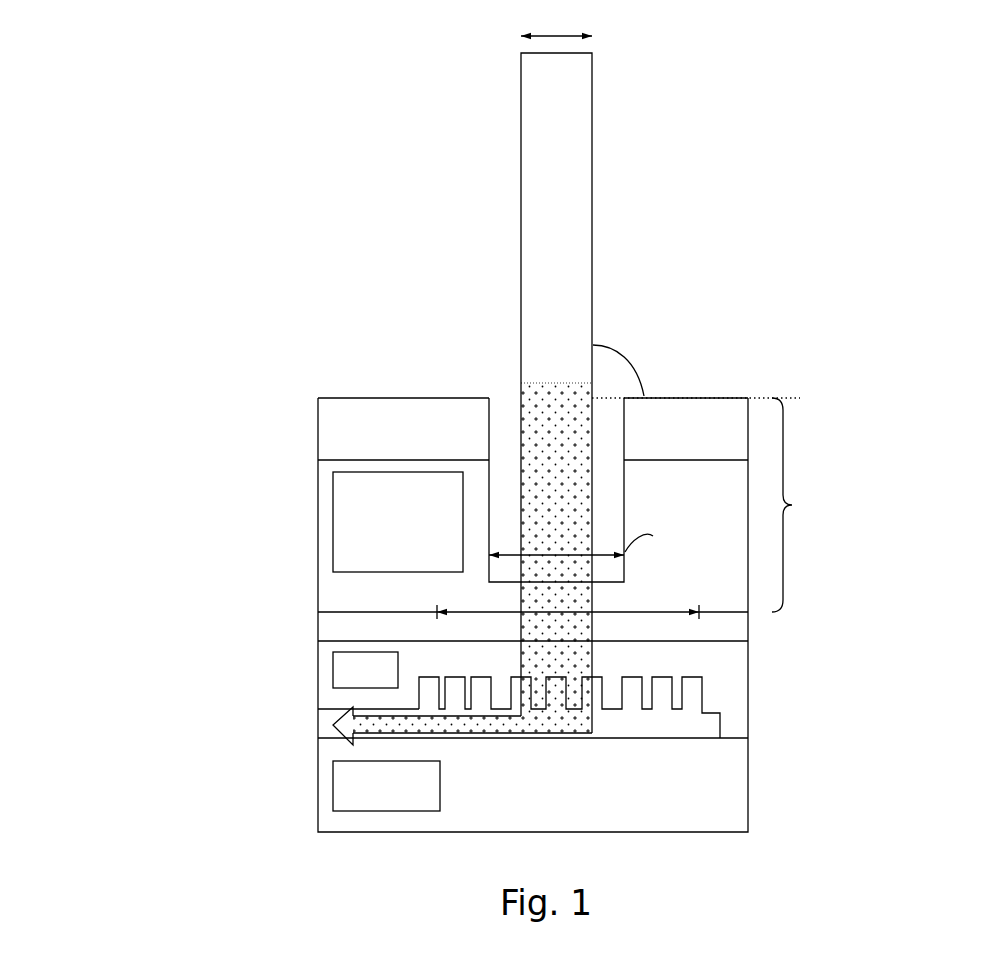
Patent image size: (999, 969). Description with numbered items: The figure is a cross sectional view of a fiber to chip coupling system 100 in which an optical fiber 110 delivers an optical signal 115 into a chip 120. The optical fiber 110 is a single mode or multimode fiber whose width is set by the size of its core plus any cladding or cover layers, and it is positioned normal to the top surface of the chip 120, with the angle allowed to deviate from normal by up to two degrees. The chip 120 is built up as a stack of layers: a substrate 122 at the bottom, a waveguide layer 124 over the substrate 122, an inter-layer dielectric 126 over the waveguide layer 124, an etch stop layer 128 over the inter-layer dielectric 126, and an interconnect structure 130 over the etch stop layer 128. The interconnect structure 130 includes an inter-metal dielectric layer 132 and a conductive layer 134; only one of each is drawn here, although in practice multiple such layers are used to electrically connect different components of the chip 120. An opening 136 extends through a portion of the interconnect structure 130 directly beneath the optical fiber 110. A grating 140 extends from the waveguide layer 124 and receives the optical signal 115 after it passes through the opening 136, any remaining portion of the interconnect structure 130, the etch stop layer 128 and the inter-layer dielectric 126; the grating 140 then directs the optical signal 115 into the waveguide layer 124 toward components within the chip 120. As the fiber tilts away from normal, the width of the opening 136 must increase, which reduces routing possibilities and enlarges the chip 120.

The fiber to chip coupling system 100 is at (220, 94).
The optical fiber 110 is at (533, 229).
The optical signal 115 is at (535, 420).
The chip 120 is at (893, 447).
The substrate 122 is at (332, 790).
The waveguide layer 124 is at (326, 722).
The inter-layer dielectric (ILD) 126 is at (332, 670).
The etch stop layer 128 is at (326, 625).
The interconnect structure 130 is at (807, 505).
The inter-metal dielectric (IMD) layer 132 is at (332, 522).
The conductive layer 134 is at (327, 429).
The opening 136 is at (640, 420).
The grating 140 is at (693, 692).